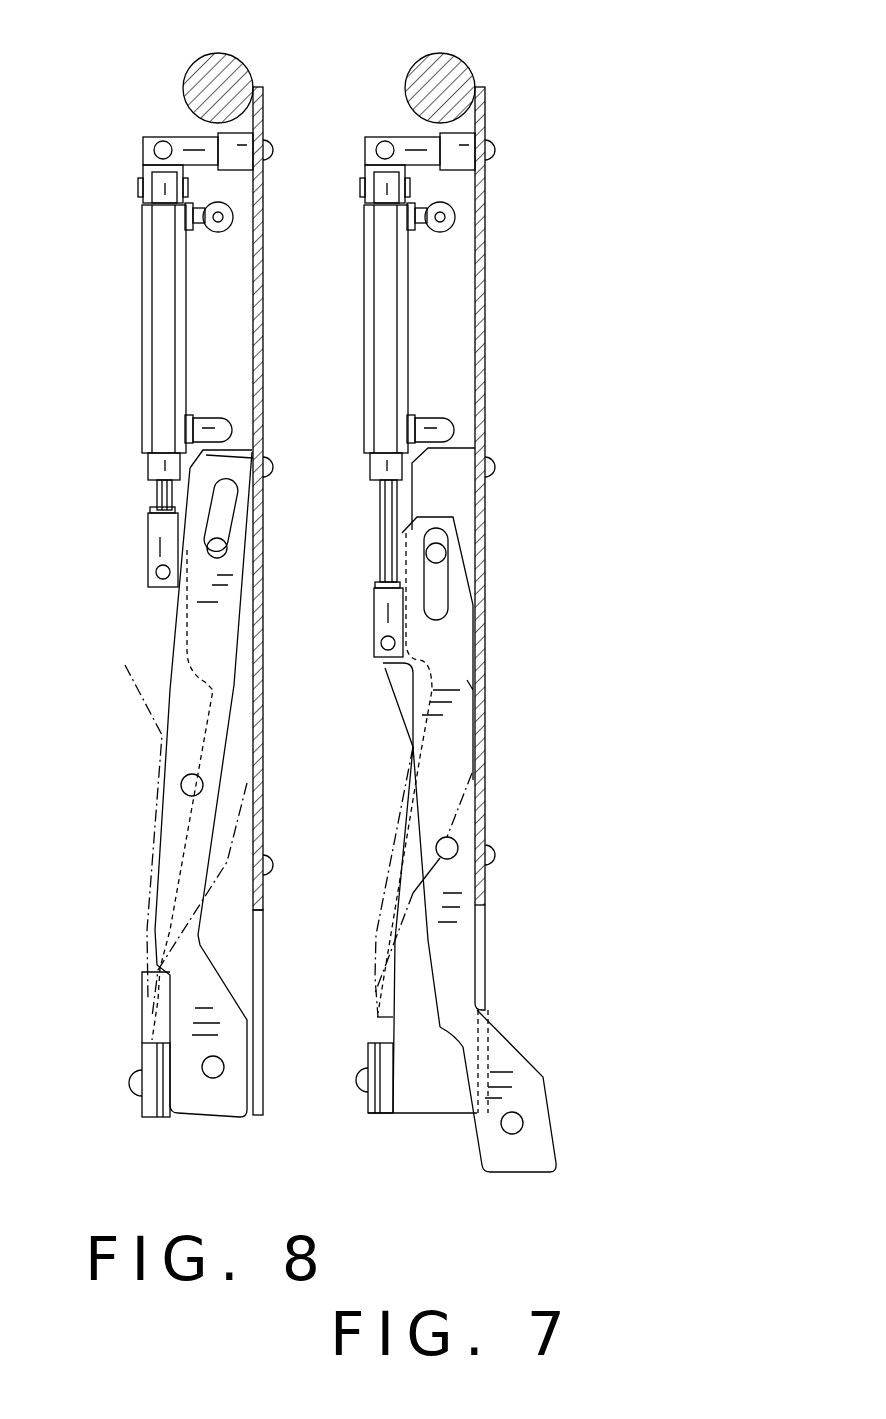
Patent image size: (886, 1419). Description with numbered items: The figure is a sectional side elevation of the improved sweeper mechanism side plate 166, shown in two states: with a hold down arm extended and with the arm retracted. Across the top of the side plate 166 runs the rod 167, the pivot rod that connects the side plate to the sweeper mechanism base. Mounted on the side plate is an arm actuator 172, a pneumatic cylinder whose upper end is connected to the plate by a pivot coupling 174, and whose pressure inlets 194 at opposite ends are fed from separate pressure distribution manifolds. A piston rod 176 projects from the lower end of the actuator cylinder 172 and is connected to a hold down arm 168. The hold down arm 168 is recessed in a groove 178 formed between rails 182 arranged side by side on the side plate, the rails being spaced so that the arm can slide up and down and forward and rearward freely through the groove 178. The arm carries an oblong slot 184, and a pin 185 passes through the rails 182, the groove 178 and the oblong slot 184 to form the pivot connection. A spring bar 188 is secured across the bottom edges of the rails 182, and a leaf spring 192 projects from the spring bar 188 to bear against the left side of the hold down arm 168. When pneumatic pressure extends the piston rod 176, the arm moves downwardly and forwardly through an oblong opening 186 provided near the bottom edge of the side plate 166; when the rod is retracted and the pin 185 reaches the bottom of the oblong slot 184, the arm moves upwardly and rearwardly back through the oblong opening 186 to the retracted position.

In FIG. 8, the side plate 166 is at (262, 397).
In FIG. 7, the side plate 166 is at (484, 397).
In FIG. 8, the rod 167 is at (223, 52).
In FIG. 7, the rod 167 is at (452, 50).
In FIG. 8, the hold down arm 168 is at (208, 1095).
In FIG. 7, the hold down arm 168 is at (510, 1160).
In FIG. 8, the arm actuator 172 is at (140, 338).
In FIG. 7, the arm actuator 172 is at (359, 342).
In FIG. 8, the pivot coupling 174 is at (142, 180).
In FIG. 7, the pivot coupling 174 is at (393, 150).
In FIG. 8, the piston rod 176 is at (150, 494).
In FIG. 7, the piston rod 176 is at (380, 517).
In FIG. 8, the groove 178 is at (227, 862).
In FIG. 7, the groove 178 is at (413, 923).
In FIG. 8, the rail 182 is at (155, 995).
In FIG. 7, the rail 182 is at (377, 1017).
In FIG. 8, the oblong slot 184 is at (221, 512).
In FIG. 7, the oblong slot 184 is at (435, 595).
In FIG. 8, the pin 185 is at (217, 547).
In FIG. 7, the pin 185 is at (443, 556).
In FIG. 8, the oblong opening 186 is at (258, 1077).
In FIG. 7, the oblong opening 186 is at (483, 988).
In FIG. 8, the spring bar 188 is at (143, 1108).
In FIG. 7, the spring bar 188 is at (368, 1107).
In FIG. 8, the leaf spring 192 is at (162, 735).
In FIG. 7, the leaf spring 192 is at (402, 800).
In FIG. 8, the pressure inlet 194 is at (217, 222).
In FIG. 7, the pressure inlet 194 is at (442, 322).